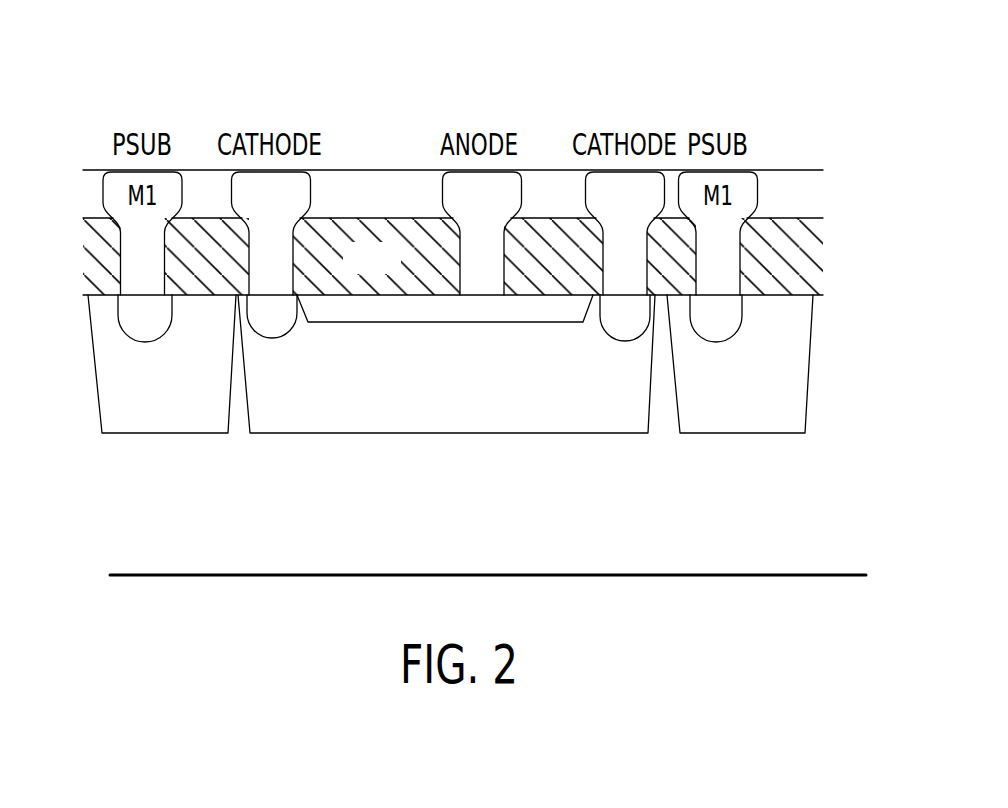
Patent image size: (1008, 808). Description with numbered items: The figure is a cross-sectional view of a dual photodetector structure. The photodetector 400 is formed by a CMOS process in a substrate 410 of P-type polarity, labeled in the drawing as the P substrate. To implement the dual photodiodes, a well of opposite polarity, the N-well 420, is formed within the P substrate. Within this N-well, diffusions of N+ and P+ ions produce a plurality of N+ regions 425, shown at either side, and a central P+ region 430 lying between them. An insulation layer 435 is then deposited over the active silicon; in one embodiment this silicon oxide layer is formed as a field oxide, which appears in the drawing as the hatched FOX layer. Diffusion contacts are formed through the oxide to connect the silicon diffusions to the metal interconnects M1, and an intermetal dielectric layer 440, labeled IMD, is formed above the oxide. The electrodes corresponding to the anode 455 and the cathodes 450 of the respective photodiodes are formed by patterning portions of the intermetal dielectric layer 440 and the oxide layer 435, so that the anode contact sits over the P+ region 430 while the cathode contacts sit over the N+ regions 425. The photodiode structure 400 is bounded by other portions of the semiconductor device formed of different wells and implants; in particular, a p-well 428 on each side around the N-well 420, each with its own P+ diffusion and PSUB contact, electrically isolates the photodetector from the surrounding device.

The photodetector 400 is at (657, 100).
The substrate 410 is at (132, 490).
The N-well 420 is at (475, 415).
The N+ regions 425 is at (272, 328).
The p-well 428 is at (137, 370).
The P+ region 430 is at (401, 312).
The insulation layer 435 is at (802, 255).
The intermetal dielectric layer 440 is at (802, 194).
The cathode 450 is at (228, 188).
The anode 455 is at (441, 186).